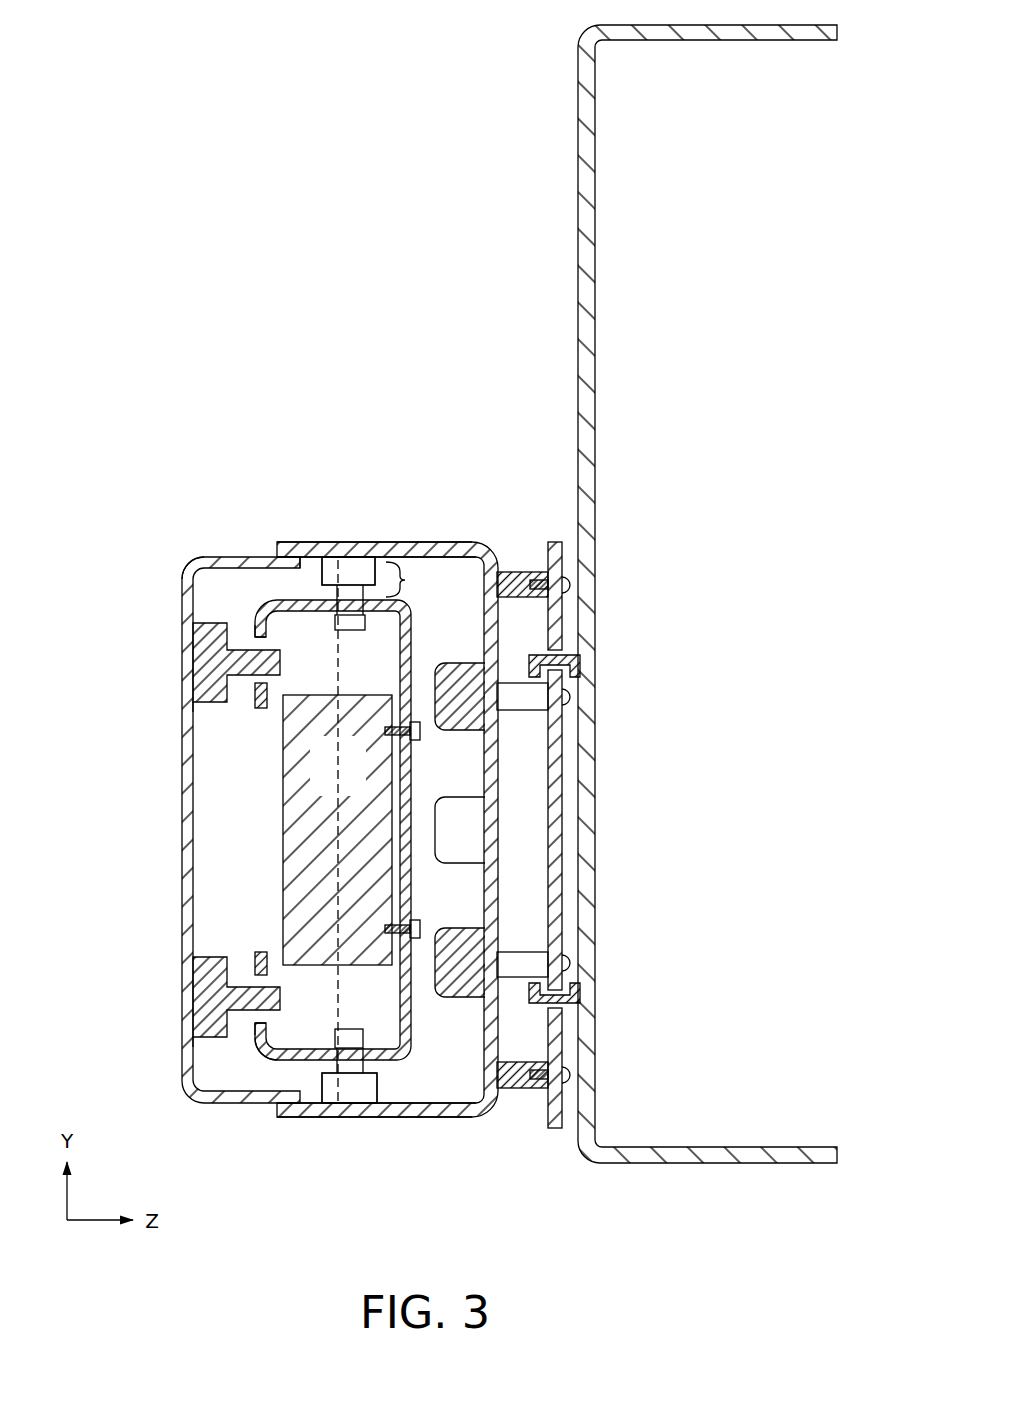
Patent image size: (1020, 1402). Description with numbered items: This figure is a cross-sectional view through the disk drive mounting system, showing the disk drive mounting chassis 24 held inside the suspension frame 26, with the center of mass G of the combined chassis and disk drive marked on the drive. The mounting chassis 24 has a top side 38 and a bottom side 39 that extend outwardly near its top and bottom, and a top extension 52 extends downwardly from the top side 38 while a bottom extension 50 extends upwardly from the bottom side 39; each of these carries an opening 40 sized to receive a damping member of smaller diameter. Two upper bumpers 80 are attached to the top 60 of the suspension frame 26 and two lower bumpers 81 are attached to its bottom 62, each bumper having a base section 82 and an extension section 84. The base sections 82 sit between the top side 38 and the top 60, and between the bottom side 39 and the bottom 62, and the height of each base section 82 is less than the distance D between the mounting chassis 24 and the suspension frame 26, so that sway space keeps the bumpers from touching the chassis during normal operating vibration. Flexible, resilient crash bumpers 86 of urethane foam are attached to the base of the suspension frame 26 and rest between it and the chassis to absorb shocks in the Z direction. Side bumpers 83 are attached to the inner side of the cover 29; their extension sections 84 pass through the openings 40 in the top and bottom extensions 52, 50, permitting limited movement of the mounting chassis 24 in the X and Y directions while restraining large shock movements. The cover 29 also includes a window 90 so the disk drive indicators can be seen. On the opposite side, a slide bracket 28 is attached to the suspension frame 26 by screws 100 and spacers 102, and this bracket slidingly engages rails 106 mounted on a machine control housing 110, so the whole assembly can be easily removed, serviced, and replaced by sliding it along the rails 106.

The disk drive mounting chassis 24 is at (258, 602).
The suspension frame 26 is at (468, 527).
The slide bracket 28 is at (563, 617).
The cover 29 is at (186, 574).
The top side 38 is at (297, 567).
The bottom side 39 is at (283, 1063).
The opening 40 is at (263, 636).
The bottom extension 50 is at (255, 1036).
The top extension 52 is at (205, 624).
The top of the frame 60 is at (428, 547).
The bottom of the frame 62 is at (373, 1117).
The upper bumper 80 is at (318, 560).
The lower bumper 81 is at (383, 1088).
The base section 82 is at (360, 565).
The side bumper 83 is at (205, 707).
The extension section 84 is at (357, 631).
The crash bumper 86 is at (447, 730).
The window 90 is at (193, 823).
The screw 100 is at (571, 583).
The spacer 102 is at (520, 572).
The rail 106 is at (580, 663).
The machine control housing 110 is at (596, 252).
The distance between the mounting chassis and the suspension frame D is at (404, 579).
The center of mass G is at (338, 828).